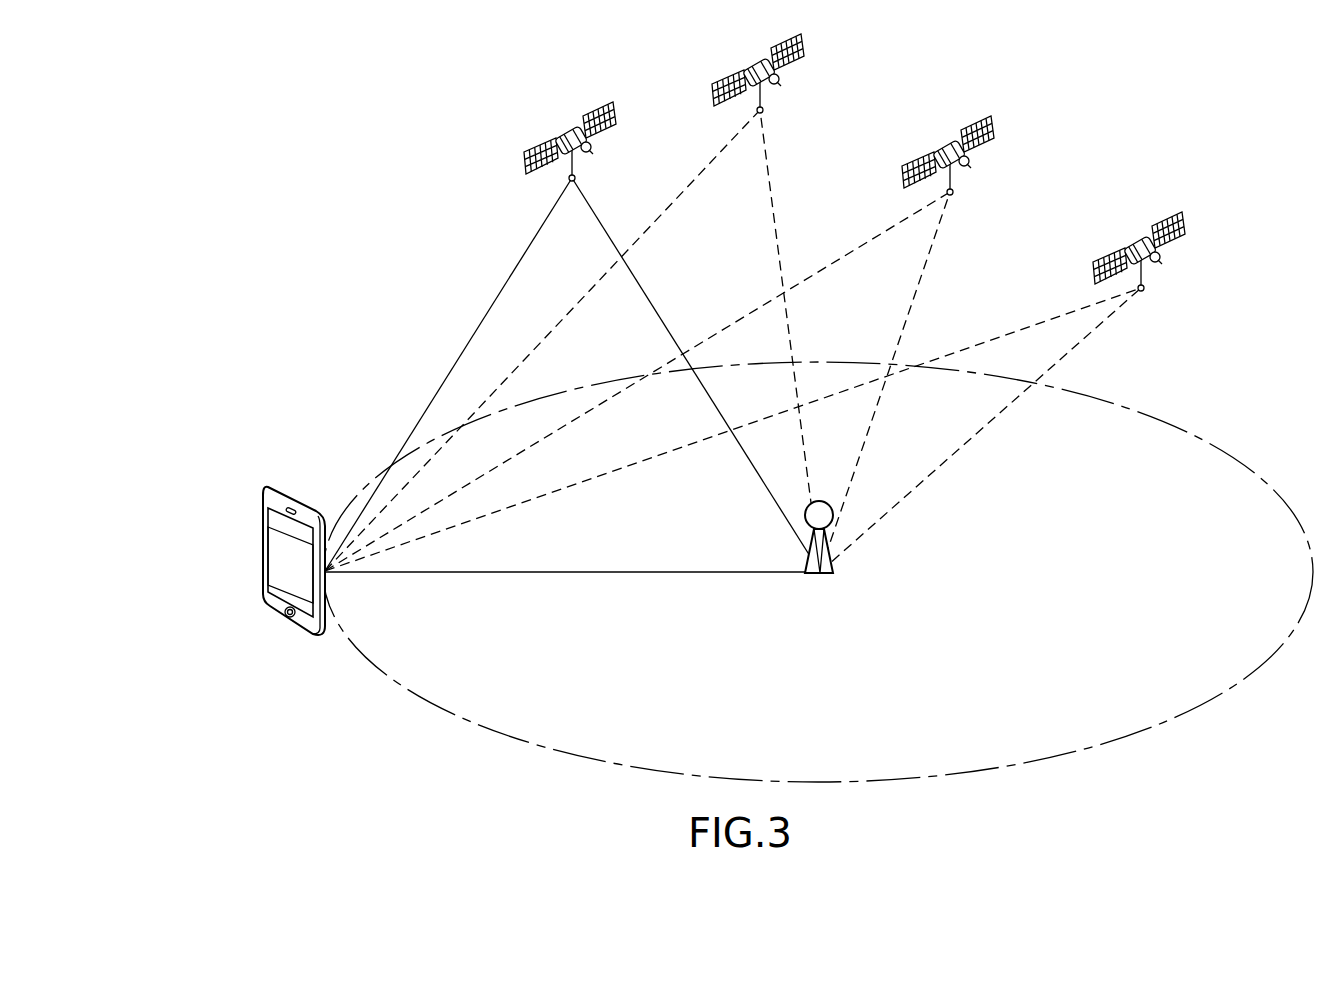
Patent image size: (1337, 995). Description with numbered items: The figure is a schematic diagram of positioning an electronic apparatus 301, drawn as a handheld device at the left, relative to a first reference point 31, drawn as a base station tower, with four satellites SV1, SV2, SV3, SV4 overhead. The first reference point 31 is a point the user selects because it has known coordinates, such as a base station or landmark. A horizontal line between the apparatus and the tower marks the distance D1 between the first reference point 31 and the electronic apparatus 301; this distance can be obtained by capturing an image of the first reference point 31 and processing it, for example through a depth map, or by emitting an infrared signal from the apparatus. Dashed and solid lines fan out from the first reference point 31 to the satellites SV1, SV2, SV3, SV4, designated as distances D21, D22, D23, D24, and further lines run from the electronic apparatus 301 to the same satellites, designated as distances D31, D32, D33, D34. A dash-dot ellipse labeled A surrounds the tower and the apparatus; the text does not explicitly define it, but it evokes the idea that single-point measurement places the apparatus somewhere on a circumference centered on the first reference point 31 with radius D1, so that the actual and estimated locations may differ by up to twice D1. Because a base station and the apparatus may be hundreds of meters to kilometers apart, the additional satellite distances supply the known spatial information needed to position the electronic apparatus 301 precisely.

The electronic apparatus 301 is at (263, 552).
The first reference point 31 is at (833, 556).
The coverage area of base station A is at (1210, 443).
The satellite SV1 is at (570, 140).
The satellite SV2 is at (758, 73).
The satellite SV3 is at (948, 155).
The satellite SV4 is at (1139, 251).
The distance between the first reference point and the electronic apparatus D1 is at (572, 575).
The distance between the first reference point and satellite SV1 D21 is at (696, 375).
The distance between the first reference point and satellite SV2 D22 is at (792, 341).
The distance between the first reference point and satellite SV3 D23 is at (902, 382).
The distance between the first reference point and satellite SV4 D24 is at (980, 430).
The distance between the electronic apparatus and satellite SV1 D31 is at (448, 374).
The distance between the electronic apparatus and satellite SV2 D32 is at (542, 340).
The distance between the electronic apparatus and satellite SV3 D33 is at (637, 381).
The distance between the electronic apparatus and satellite SV4 D34 is at (733, 429).